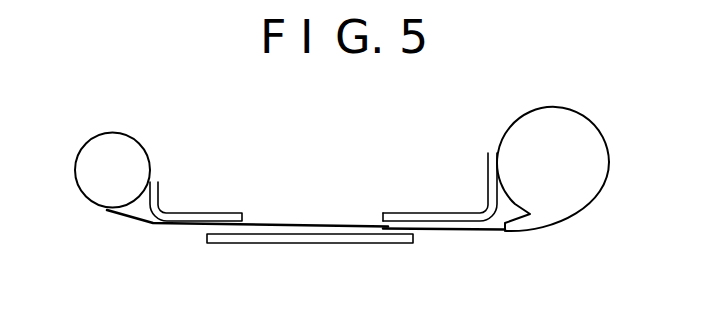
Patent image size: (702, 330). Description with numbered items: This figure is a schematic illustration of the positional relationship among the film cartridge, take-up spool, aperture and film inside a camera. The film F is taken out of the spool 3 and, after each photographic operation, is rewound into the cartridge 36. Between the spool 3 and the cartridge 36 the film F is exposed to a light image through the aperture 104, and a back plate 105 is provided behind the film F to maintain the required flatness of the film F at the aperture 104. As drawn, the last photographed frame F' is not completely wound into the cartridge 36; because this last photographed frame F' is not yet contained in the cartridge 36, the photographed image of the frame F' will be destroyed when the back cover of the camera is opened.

The spool 3 is at (124, 142).
The cartridge 36 is at (586, 134).
The aperture 104 is at (237, 211).
The back plate 105 is at (317, 245).
The film F is at (247, 250).
The last photographed frame F' is at (444, 260).